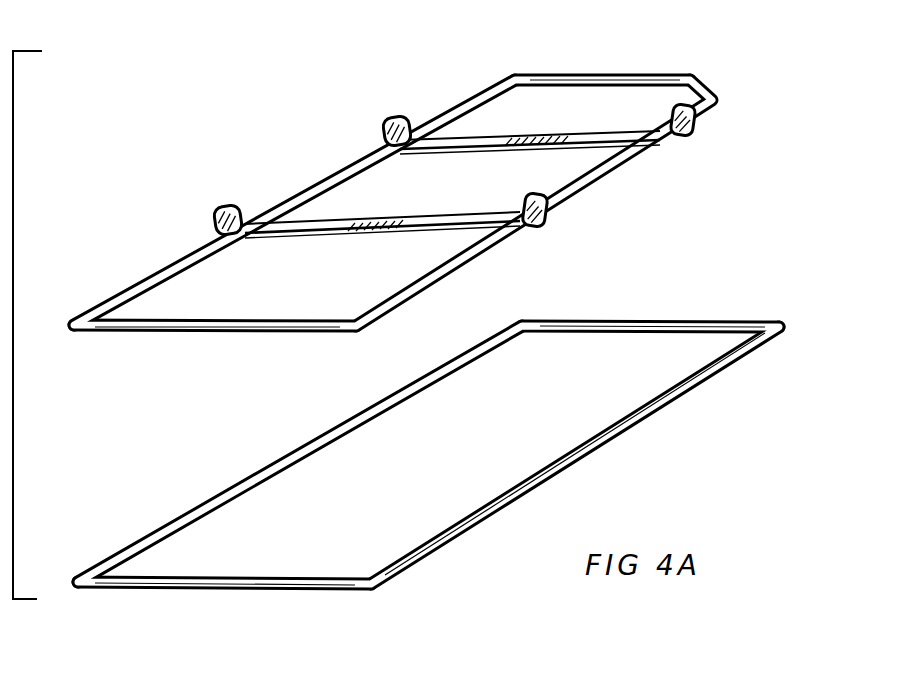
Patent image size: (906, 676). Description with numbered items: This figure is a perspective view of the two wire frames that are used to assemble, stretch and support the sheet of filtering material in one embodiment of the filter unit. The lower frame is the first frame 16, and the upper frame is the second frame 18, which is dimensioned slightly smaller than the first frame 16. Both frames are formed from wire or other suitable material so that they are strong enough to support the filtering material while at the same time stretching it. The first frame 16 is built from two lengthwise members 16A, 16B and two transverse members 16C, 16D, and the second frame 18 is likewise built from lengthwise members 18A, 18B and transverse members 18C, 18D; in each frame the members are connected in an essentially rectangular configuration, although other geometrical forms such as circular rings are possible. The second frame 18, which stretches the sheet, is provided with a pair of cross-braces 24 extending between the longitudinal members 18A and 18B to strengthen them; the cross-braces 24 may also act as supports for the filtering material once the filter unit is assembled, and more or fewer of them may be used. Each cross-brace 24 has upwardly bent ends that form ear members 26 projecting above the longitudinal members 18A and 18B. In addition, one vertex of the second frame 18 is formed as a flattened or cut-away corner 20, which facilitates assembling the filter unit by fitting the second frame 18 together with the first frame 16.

The first frame 16 is at (467, 436).
The lengthwise member 16A is at (600, 452).
The lengthwise member 16B is at (157, 532).
The transverse member 16C is at (258, 590).
The transverse member 16D is at (665, 321).
The second frame 18 is at (446, 204).
The lengthwise member 18A is at (335, 178).
The lengthwise member 18B is at (588, 184).
The transverse member 18C is at (223, 333).
The transverse member 18D is at (660, 76).
The flattened vertex 20 is at (709, 92).
The cross-brace 24 is at (455, 143).
The ear member 26 is at (383, 125).